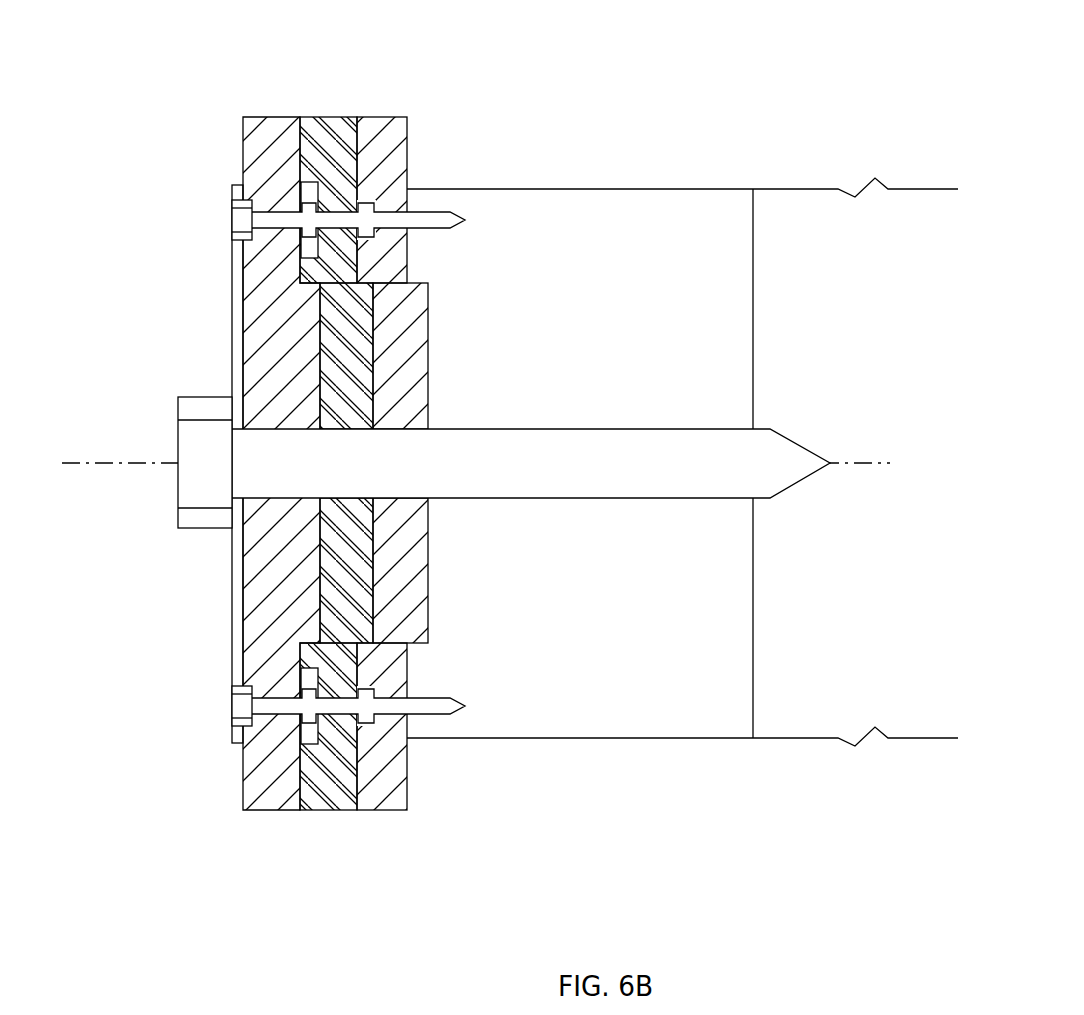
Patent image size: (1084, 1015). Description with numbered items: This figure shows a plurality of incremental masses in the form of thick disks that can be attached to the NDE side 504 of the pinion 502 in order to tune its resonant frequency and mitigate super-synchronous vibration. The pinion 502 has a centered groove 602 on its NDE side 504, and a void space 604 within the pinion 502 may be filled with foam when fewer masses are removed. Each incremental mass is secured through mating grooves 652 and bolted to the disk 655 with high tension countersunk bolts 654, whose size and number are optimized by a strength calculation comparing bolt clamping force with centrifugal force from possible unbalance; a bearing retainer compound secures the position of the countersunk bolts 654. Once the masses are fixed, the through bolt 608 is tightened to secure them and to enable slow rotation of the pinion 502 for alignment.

The pinion 502 is at (136, 78).
The NDE side 504 is at (162, 349).
The centered groove 602 is at (763, 480).
The void space 604 is at (381, 793).
The through bolt 608 is at (178, 517).
The mating grooves 652 is at (400, 267).
The high tension countersunk bolts 654 is at (376, 209).
The disk 655 is at (383, 117).